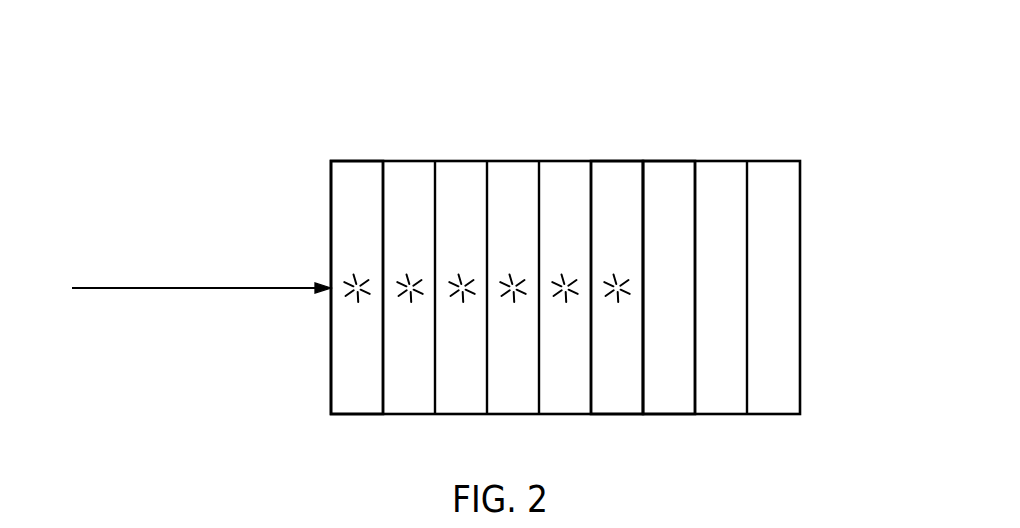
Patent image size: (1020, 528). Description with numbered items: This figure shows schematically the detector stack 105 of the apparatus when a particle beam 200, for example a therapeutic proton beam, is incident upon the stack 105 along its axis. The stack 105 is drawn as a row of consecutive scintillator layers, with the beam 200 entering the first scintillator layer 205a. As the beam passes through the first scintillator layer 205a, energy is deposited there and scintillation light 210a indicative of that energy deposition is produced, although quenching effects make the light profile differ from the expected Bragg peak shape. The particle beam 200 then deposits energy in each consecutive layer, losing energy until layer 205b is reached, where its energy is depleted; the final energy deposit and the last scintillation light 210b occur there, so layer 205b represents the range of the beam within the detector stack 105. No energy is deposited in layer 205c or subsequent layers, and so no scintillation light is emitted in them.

The detector stack 105 is at (837, 135).
The particle beam 200 is at (123, 287).
The first scintillator layer 205a is at (359, 160).
The scintillator layer 205b is at (618, 160).
The scintillator layer 205c is at (697, 133).
The scintillation light 210a is at (357, 309).
The second emitter / scattering center 210b is at (618, 310).